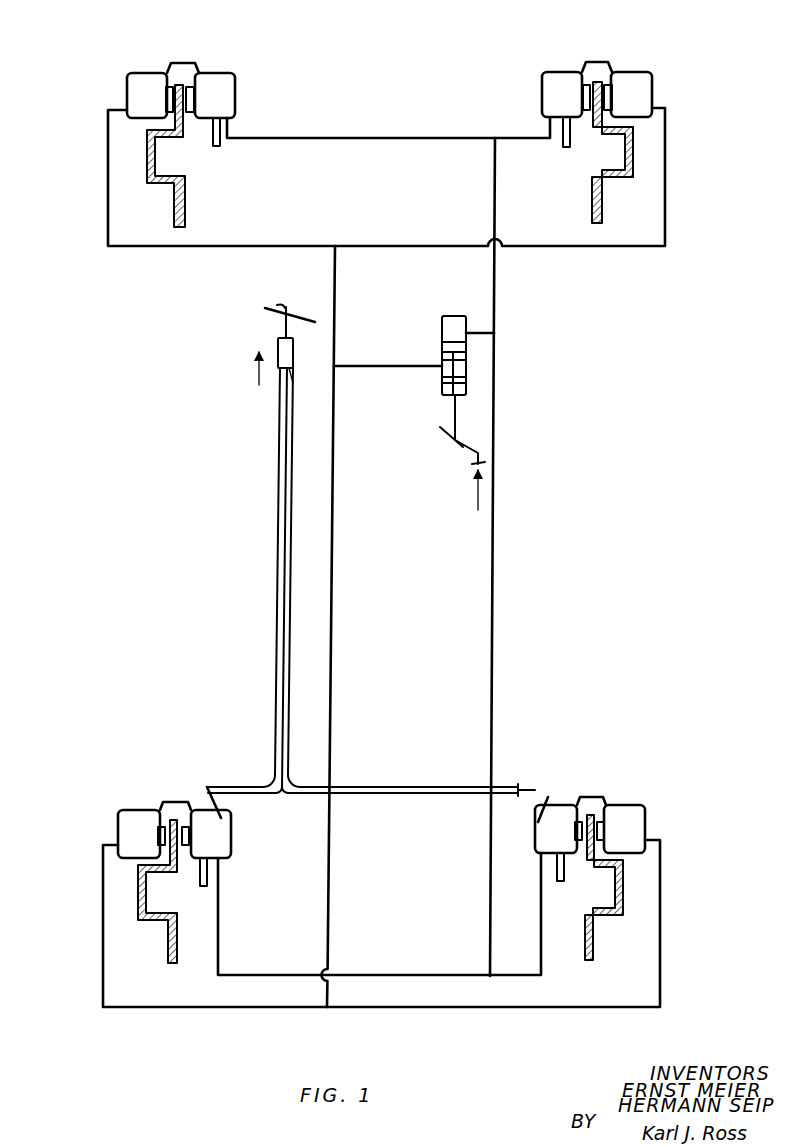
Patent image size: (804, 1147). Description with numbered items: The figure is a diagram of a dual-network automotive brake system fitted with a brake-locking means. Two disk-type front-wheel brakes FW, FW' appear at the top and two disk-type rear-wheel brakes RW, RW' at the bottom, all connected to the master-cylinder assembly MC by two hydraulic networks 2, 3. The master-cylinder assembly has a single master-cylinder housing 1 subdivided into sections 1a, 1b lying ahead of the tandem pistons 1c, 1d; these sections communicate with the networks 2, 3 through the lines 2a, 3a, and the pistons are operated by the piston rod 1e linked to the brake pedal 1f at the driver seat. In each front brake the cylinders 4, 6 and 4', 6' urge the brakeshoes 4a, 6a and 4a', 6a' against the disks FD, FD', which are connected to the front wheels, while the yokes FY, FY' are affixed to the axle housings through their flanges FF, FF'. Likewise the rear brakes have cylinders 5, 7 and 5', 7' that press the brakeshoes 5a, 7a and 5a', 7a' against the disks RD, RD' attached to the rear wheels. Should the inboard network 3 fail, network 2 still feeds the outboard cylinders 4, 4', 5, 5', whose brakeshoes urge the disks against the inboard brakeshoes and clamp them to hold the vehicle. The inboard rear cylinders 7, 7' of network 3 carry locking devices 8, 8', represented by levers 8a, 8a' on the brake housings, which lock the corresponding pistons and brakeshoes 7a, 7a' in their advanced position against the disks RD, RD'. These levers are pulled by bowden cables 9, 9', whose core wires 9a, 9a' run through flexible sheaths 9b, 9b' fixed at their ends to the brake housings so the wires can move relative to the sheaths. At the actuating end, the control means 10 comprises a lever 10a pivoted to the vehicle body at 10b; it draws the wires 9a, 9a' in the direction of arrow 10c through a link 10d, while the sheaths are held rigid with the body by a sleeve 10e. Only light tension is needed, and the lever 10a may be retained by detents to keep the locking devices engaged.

The master-cylinder housing 1 is at (458, 316).
The master-cylinder section 1a is at (444, 367).
The master-cylinder section 1b is at (443, 325).
The piston 1c is at (460, 352).
The piston 1d is at (462, 386).
The piston rod 1e is at (456, 425).
The brake pedal 1f is at (461, 447).
The hydraulic network 2 is at (330, 460).
The line 2a is at (384, 364).
The hydraulic network 3 is at (491, 512).
The line 3a is at (480, 333).
The master-cylinder assembly MC is at (471, 370).
The cylinder 4 is at (145, 79).
The brakeshoe 4a is at (174, 73).
The cylinder 6 is at (211, 85).
The brakeshoe 6a is at (205, 73).
The yoke FY is at (246, 48).
The flange FF is at (238, 142).
The disk FD is at (209, 193).
The front-wheel brake FW is at (151, 156).
The cylinder 4' is at (619, 73).
The brakeshoe 4a' is at (619, 65).
The cylinder 6' is at (562, 73).
The brakeshoe 6a' is at (582, 65).
The yoke FY' is at (677, 67).
The flange FF' is at (589, 140).
The disk FD' is at (565, 197).
The front-wheel brake FW' is at (626, 159).
The control means 10 is at (275, 338).
The lever 10a is at (300, 318).
The pivot 10b is at (278, 310).
The arrow 10c is at (258, 378).
The link 10d is at (290, 332).
The sleeve 10e is at (292, 384).
The bowden flexible-cable means 9 is at (247, 580).
The bowden flexible-cable means 9' is at (374, 582).
The wire 9a is at (234, 771).
The flexible sheath 9b is at (284, 811).
The wire 9a' is at (551, 774).
The flexible sheath 9b' is at (410, 818).
The locking device 8 is at (190, 777).
The lever 8a is at (243, 828).
The locking device 8' is at (583, 788).
The lever 8a' is at (516, 827).
The cylinder 5 is at (120, 827).
The brakeshoe 5a is at (144, 808).
The cylinder 7 is at (208, 838).
The brakeshoe 7a is at (193, 869).
The rear-wheel brake RW is at (81, 835).
The disk RD is at (147, 894).
The cylinder 5' is at (629, 820).
The brakeshoe 5a' is at (631, 806).
The cylinder 7' is at (540, 837).
The brakeshoe 7a' is at (565, 869).
The rear-wheel brake RW' is at (711, 816).
The disk RD' is at (615, 900).